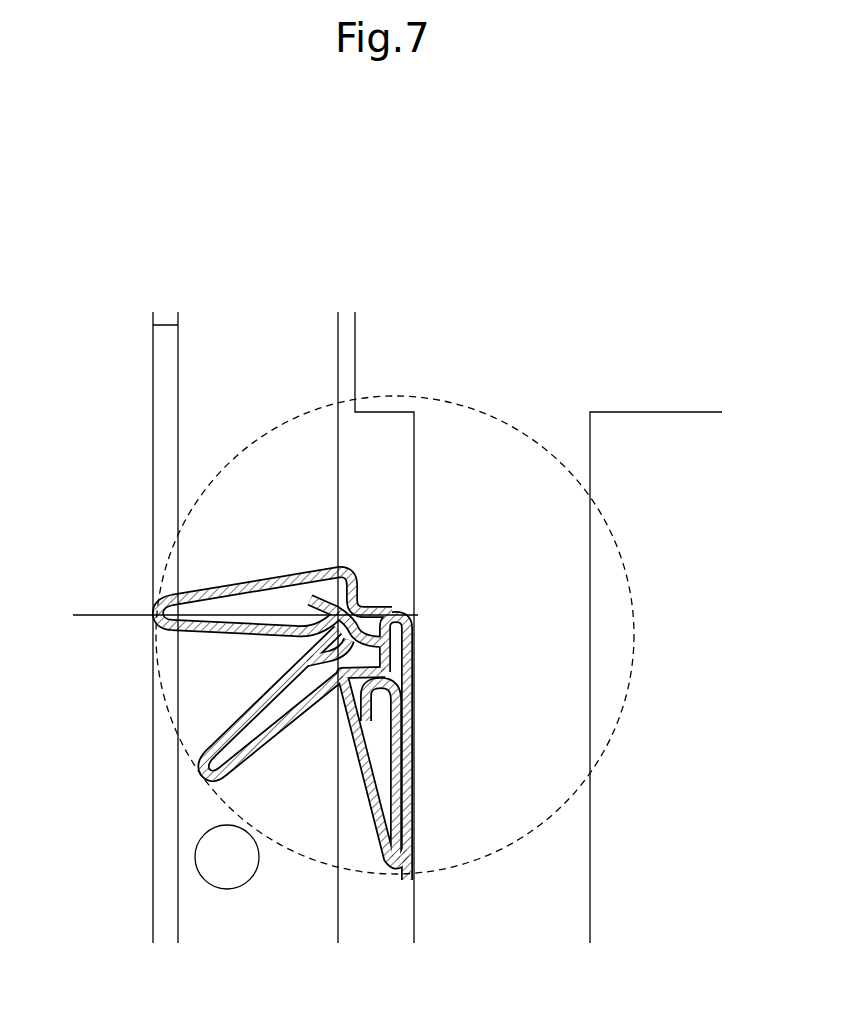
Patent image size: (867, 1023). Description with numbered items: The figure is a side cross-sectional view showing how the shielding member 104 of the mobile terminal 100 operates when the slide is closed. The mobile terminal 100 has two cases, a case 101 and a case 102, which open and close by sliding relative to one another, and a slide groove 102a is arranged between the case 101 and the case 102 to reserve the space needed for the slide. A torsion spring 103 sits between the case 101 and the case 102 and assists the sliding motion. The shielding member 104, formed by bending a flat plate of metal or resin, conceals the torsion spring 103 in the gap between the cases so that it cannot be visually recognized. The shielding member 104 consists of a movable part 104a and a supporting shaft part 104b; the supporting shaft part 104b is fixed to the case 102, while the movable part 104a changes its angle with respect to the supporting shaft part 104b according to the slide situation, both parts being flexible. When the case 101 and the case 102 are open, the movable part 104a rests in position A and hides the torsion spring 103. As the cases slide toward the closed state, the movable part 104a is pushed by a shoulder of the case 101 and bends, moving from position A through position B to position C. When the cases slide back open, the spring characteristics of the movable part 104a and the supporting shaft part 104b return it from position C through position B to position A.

The mobile terminal 100 is at (150, 262).
The case 101 is at (283, 353).
The case 102 is at (560, 357).
The slide groove 102a is at (370, 442).
The torsion spring 103 is at (230, 878).
The shielding member 104 is at (429, 752).
The movable part 104a is at (205, 583).
The supporting shaft part 104b is at (407, 826).
The position A is at (153, 630).
The position B is at (207, 767).
The position C is at (393, 873).